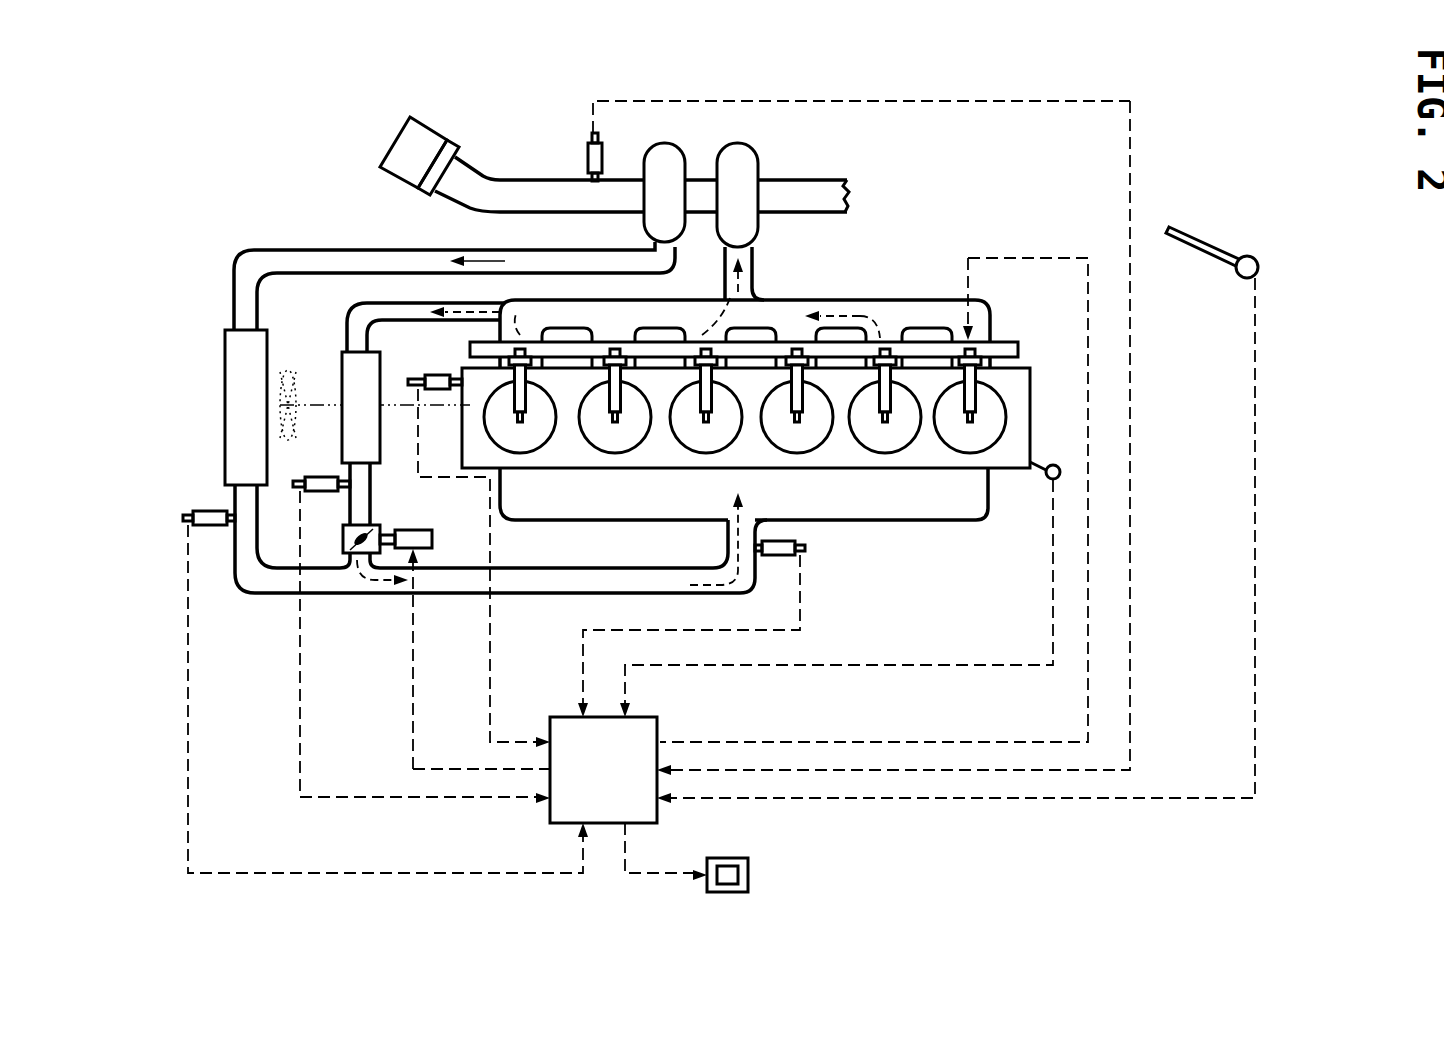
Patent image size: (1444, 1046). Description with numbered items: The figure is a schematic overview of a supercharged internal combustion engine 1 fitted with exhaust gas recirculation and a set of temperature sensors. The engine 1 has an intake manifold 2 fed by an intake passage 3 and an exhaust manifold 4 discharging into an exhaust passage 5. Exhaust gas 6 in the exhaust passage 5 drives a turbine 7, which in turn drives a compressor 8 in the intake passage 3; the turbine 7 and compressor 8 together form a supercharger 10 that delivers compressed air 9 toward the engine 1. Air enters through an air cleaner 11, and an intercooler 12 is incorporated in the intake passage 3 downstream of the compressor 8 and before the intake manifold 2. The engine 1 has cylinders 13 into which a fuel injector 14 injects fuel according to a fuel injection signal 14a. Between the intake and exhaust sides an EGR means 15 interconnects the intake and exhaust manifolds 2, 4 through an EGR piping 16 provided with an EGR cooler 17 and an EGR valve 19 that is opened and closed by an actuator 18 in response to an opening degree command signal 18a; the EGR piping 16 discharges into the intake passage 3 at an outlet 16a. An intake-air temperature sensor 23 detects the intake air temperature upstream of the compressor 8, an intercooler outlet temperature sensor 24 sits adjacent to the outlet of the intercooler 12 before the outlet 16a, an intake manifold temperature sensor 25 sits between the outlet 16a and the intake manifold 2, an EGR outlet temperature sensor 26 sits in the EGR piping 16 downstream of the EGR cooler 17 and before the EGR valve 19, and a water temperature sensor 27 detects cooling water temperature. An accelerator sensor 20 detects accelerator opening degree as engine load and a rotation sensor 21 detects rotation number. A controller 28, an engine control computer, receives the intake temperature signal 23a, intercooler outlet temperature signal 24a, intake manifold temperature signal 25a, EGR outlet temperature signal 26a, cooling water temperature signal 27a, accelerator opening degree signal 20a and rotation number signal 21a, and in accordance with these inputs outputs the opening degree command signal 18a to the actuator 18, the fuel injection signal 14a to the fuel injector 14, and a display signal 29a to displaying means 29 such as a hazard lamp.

The supercharged internal combustion engine 1 is at (875, 290).
The intake manifold 2 is at (928, 495).
The intake passage 3 is at (532, 595).
The exhaust manifold 4 is at (912, 303).
The exhaust passage 5 is at (752, 248).
The exhaust gas 6 is at (715, 304).
The turbine 7 is at (747, 168).
The compressor 8 is at (655, 168).
The compressed air 9 is at (503, 262).
The supercharger 10 is at (712, 140).
The air cleaner 11 is at (410, 131).
The intercooler 12 is at (225, 372).
The cylinders 13 is at (540, 430).
The fuel injector 14 is at (997, 328).
The fuel injection signal 14a is at (1057, 258).
The EGR means 15 is at (327, 315).
The EGR piping 16 is at (357, 315).
The outlet of EGR piping 16a is at (355, 577).
The EGR cooler 17 is at (342, 372).
The actuator 18 is at (430, 530).
The opening degree command signal 18a is at (413, 687).
The EGR valve 19 is at (380, 525).
The accelerator sensor 20 is at (1258, 262).
The accelerator opening degree signal 20a is at (1257, 408).
The rotation sensor 21 is at (1048, 485).
The rotation number signal 21a is at (988, 665).
The intake-air temperature sensor 23 is at (588, 152).
The intake temperature signal 23a is at (1130, 127).
The intercooler outlet temperature sensor 24 is at (200, 510).
The intercooler outlet temperature signal 24a is at (186, 727).
The intake manifold temperature sensor 25 is at (805, 550).
The intake manifold temperature signal 25a is at (800, 608).
The EGR outlet temperature sensor 26 is at (320, 492).
The EGR outlet temperature signal 26a is at (300, 676).
The water temperature sensor 27 is at (425, 382).
The cooling water temperature signal 27a is at (490, 716).
The controller 28 is at (627, 782).
The displaying means 29 is at (748, 878).
The display signal 29a is at (625, 845).